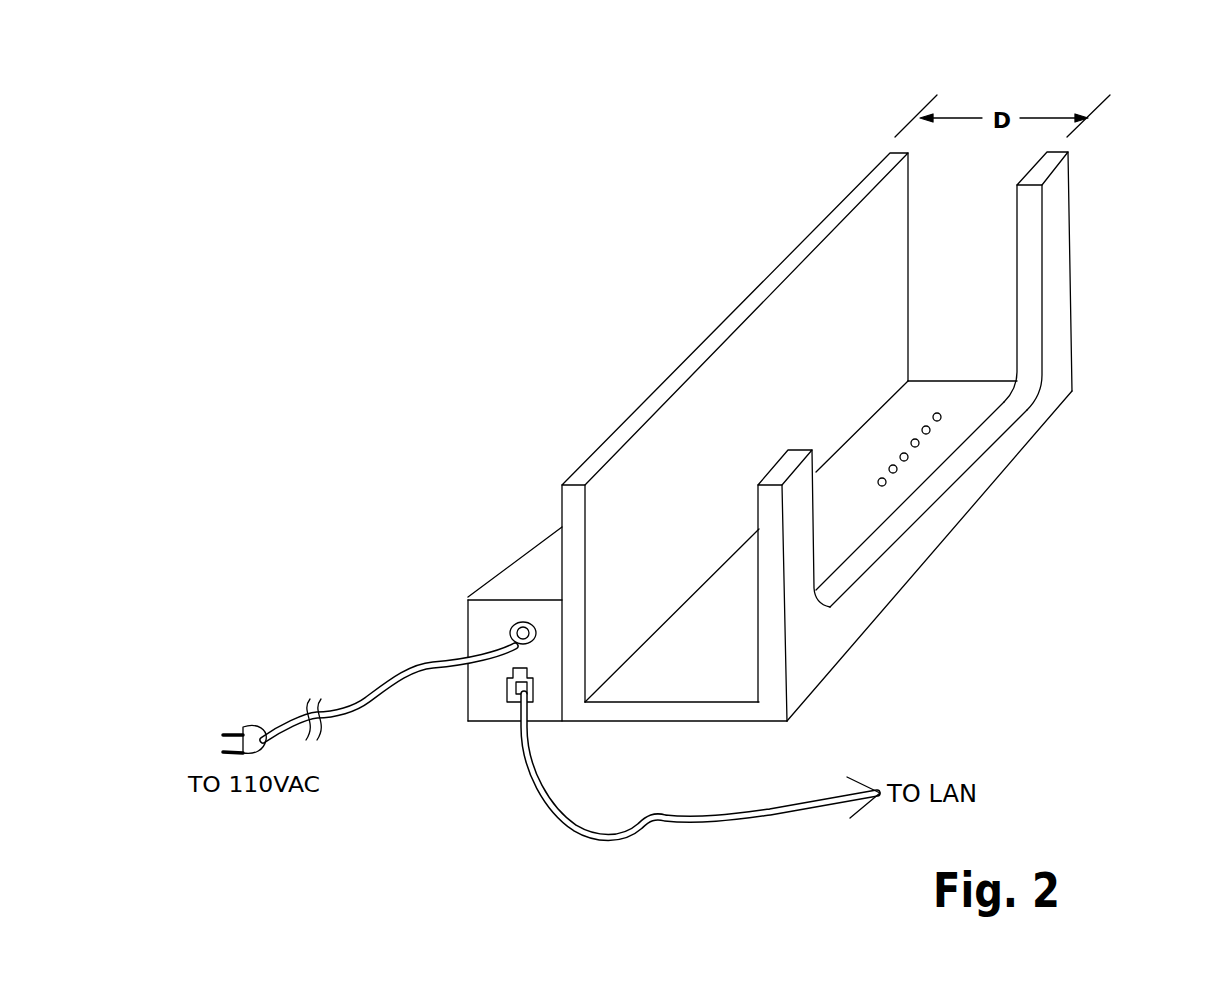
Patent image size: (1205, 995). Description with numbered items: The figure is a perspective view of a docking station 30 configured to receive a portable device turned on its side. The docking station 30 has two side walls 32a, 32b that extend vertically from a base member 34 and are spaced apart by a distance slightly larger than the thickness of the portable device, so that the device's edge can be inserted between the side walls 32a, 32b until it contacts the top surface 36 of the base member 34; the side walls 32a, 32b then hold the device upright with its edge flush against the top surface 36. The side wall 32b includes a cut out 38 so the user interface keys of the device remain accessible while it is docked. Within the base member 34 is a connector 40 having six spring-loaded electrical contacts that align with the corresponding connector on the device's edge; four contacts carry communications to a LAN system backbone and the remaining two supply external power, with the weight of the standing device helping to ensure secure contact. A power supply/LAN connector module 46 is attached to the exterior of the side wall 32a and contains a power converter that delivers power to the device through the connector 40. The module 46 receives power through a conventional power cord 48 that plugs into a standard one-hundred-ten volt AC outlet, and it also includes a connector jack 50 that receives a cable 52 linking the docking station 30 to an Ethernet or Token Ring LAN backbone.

The docking station 30 is at (651, 114).
The side wall 32a is at (683, 357).
The side wall 32b is at (1057, 250).
The base member 34 is at (708, 713).
The top surface 36 is at (657, 683).
The cut out 38 is at (977, 489).
The connector 40 is at (930, 398).
The power supply/LAN connector module 46 is at (535, 578).
The power cord 48 is at (373, 702).
The connector jack 50 is at (507, 698).
The cable 52 is at (782, 823).